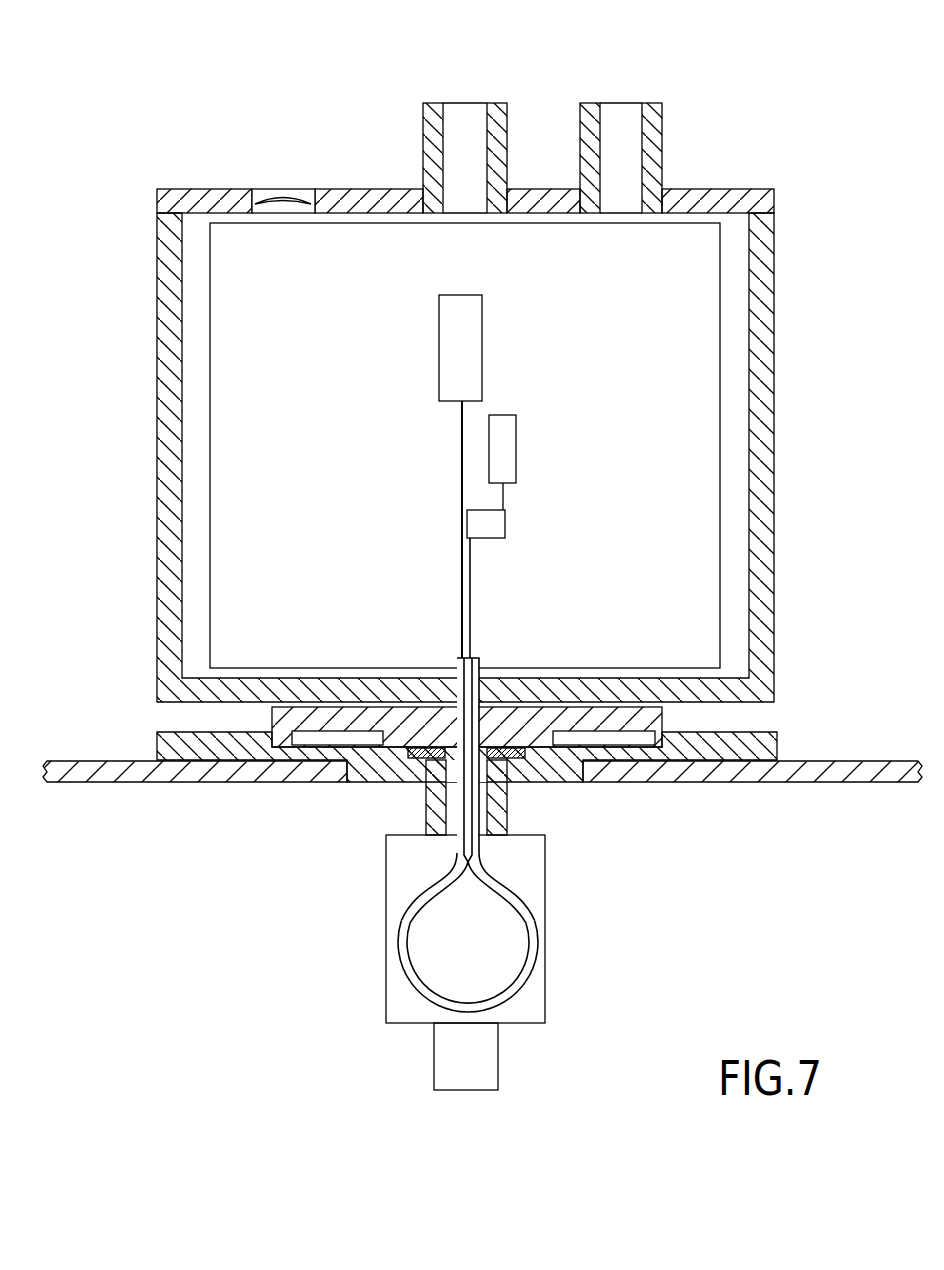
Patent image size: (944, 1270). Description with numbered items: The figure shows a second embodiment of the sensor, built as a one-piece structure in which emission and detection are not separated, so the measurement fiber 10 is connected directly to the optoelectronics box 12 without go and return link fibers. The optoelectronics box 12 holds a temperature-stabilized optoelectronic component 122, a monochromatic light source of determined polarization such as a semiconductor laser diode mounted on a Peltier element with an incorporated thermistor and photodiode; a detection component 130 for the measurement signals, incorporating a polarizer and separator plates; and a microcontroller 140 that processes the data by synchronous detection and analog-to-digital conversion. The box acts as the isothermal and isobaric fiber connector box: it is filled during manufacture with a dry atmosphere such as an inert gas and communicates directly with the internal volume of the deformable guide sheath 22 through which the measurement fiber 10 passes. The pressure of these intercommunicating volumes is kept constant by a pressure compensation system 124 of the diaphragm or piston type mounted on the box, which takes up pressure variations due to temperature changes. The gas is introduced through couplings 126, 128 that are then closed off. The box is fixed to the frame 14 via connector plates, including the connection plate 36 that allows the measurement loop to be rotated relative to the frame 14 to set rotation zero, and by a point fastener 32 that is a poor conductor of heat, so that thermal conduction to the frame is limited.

The measurement fiber 10 is at (403, 935).
The optoelectronics box 12 is at (768, 353).
The frame 14 is at (802, 765).
The deformable guide sheath 22 is at (457, 660).
The point fastener 32 is at (657, 702).
The connection plate 36 is at (327, 710).
The temperature-stabilized optoelectronic component 122 is at (453, 328).
The pressure compensation system 124 is at (300, 190).
The coupling 126 is at (470, 122).
The coupling 128 is at (630, 118).
The detection component 130 is at (497, 523).
The microcontroller 140 is at (505, 447).